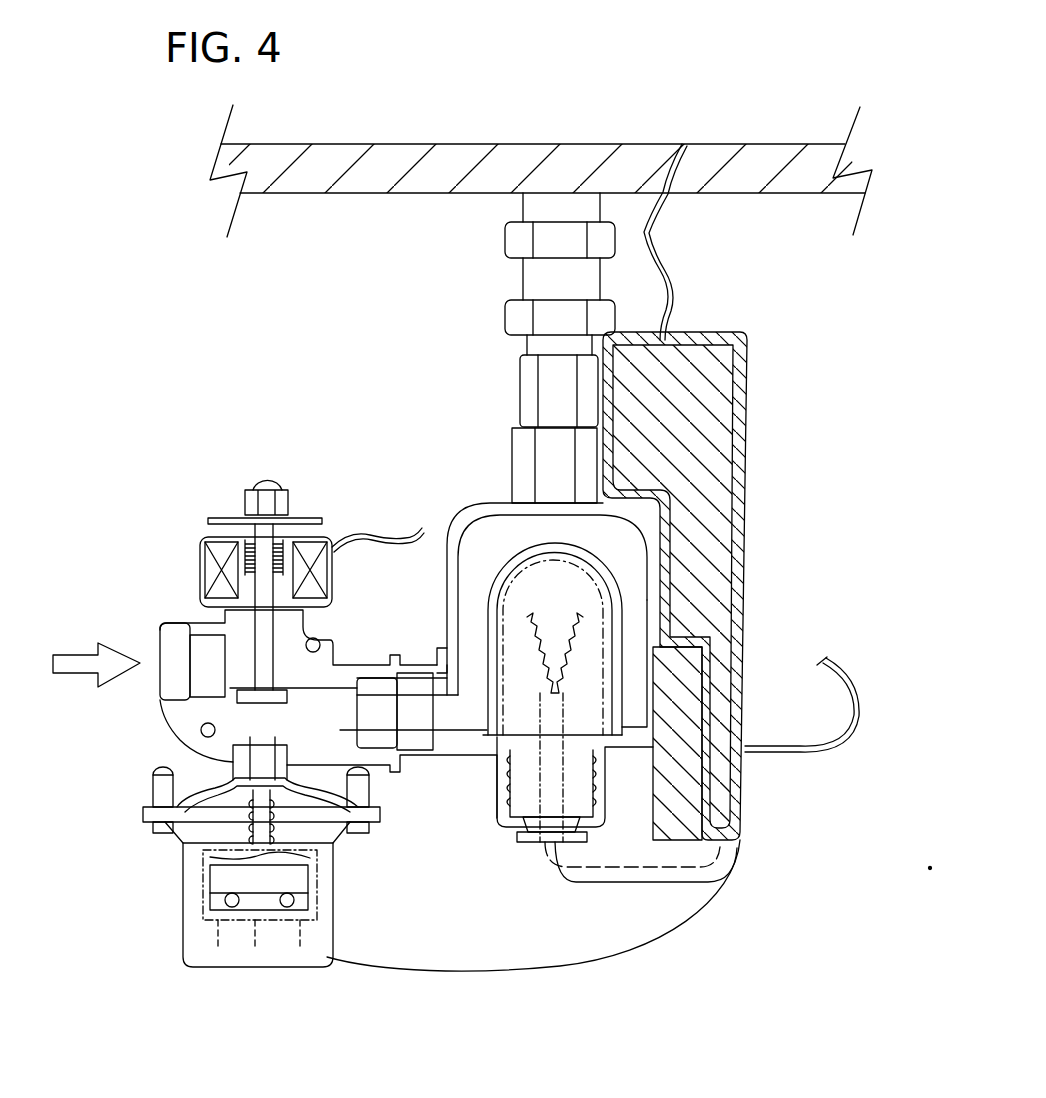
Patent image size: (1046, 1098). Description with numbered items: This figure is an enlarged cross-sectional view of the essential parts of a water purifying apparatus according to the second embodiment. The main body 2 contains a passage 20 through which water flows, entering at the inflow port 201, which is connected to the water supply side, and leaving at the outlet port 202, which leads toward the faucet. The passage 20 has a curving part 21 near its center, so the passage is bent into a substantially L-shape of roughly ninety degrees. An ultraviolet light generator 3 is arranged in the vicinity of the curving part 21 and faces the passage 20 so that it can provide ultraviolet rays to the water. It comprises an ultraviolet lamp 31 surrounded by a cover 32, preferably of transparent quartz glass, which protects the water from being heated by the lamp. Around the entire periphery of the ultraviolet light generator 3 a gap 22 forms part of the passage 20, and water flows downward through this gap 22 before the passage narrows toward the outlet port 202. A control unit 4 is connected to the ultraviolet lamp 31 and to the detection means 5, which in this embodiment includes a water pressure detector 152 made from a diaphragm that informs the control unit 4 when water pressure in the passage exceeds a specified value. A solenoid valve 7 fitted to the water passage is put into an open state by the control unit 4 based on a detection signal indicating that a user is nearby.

The main body 2 is at (460, 525).
The ultraviolet light generator 3 is at (501, 692).
The control unit 4 is at (745, 385).
The detection means 5 is at (188, 872).
The solenoid valve 7 is at (207, 527).
The passage 20 is at (520, 530).
The curving part 21 is at (630, 693).
The gap 22 is at (633, 592).
The ultraviolet lamp 31 is at (513, 598).
The cover 32 is at (488, 628).
The water pressure detector 152 is at (238, 867).
The inflow port 201 is at (160, 690).
The outlet port 202 is at (550, 445).